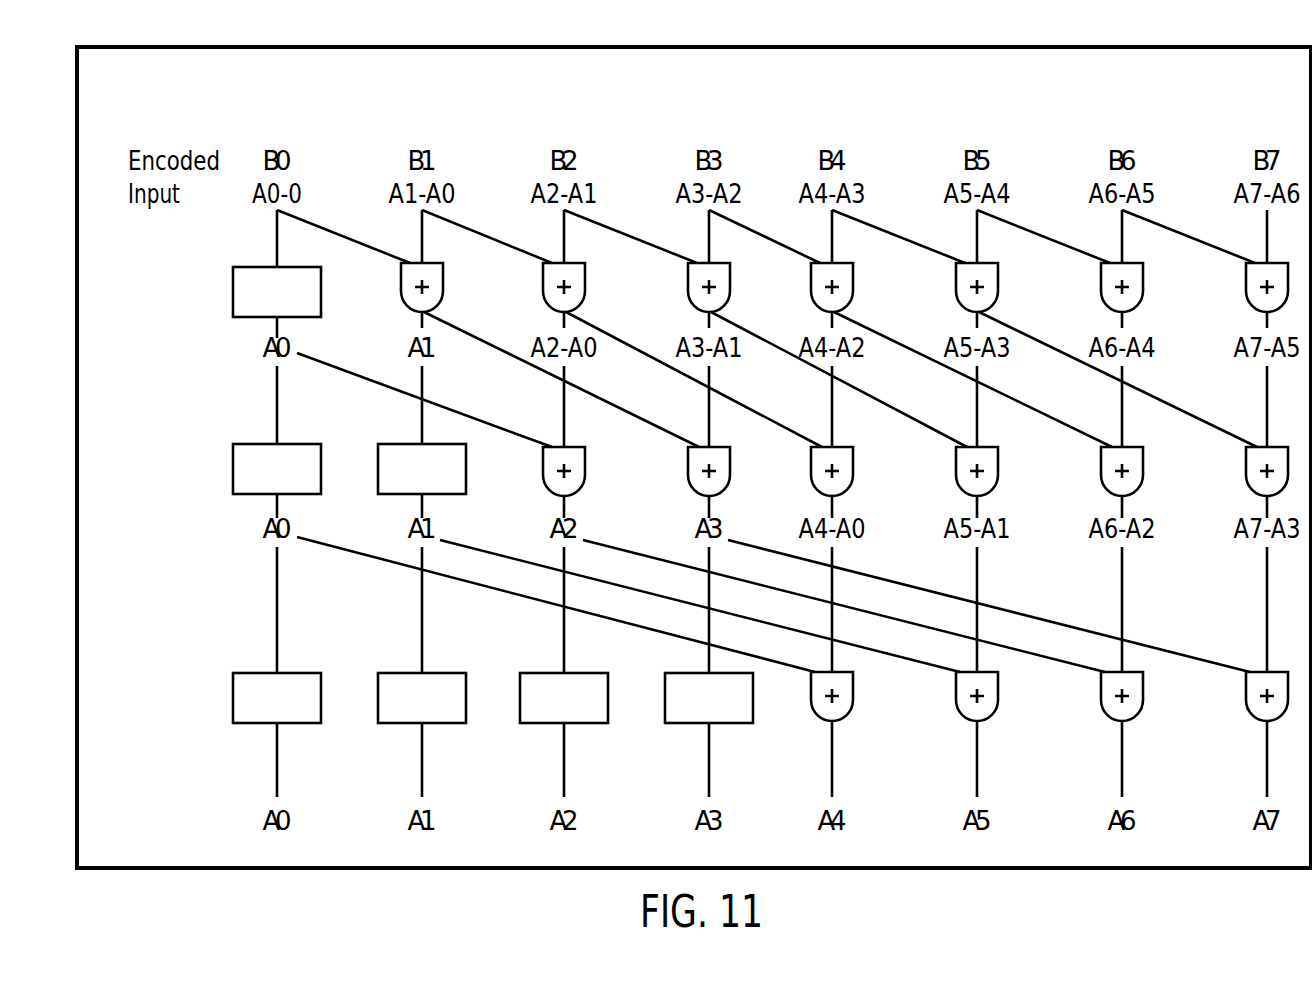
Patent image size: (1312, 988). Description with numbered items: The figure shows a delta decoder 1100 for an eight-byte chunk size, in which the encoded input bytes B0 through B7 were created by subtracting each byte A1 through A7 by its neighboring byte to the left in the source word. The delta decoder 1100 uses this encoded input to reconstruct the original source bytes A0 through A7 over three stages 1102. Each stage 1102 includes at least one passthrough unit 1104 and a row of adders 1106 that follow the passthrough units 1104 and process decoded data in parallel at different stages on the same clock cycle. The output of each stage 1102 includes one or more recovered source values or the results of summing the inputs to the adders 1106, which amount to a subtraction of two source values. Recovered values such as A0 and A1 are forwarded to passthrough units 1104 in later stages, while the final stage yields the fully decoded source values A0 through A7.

The delta decoder 1100 is at (155, 46).
The stage 1102 is at (223, 671).
The passthrough unit 1104 is at (493, 495).
The adder 1106 is at (591, 465).